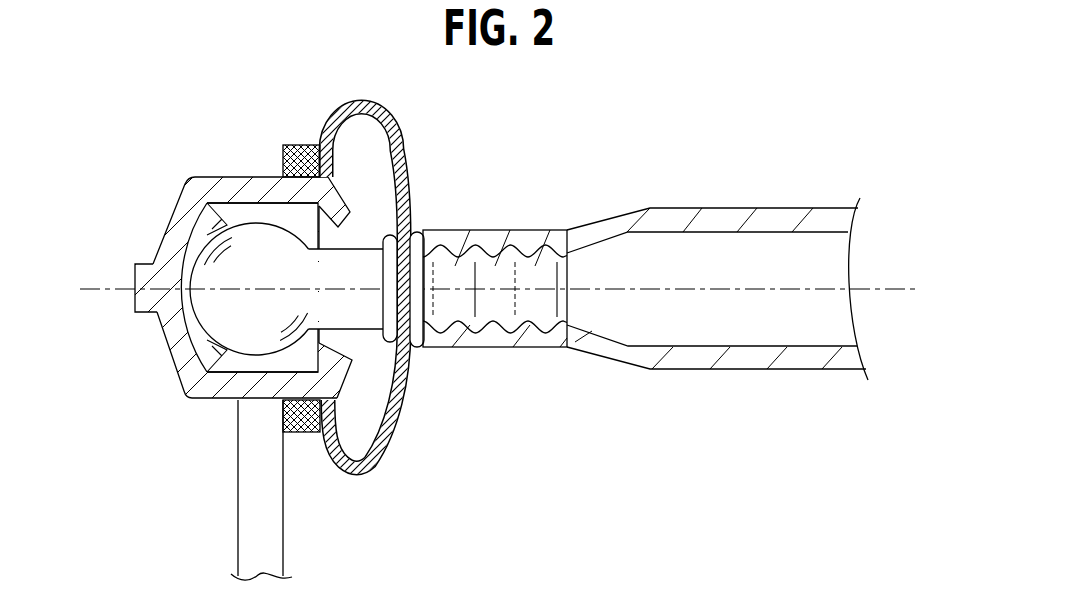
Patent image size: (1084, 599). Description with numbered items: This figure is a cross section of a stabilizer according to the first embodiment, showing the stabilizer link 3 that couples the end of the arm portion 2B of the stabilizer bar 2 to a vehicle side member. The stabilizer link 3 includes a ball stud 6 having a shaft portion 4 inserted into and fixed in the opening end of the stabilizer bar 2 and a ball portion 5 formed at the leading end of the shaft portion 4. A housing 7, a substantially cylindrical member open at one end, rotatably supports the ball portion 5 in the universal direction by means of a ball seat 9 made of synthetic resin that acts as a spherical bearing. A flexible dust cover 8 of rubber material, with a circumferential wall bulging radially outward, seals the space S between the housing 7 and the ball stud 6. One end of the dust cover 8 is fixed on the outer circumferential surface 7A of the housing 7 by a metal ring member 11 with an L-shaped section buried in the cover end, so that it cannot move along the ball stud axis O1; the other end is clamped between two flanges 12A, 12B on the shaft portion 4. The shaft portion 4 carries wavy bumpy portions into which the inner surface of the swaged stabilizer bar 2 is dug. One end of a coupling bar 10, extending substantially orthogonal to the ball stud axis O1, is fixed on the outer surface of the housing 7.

The stabilizer bar 2 is at (726, 198).
The arm portion 2B is at (778, 222).
The stabilizer link 3 is at (166, 196).
The shaft portion 4 is at (456, 267).
The ball portion 5 is at (176, 340).
The ball stud 6 is at (358, 338).
The housing 7 is at (183, 364).
The outer circumferential surface 7A is at (252, 176).
The dust cover 8 is at (393, 156).
The ball seat 9 is at (222, 212).
The coupling bar 10 is at (250, 502).
The ring member 11 is at (301, 145).
The flange 12A is at (392, 365).
The flange 12B is at (416, 346).
The space S is at (343, 240).
The ball stud axis O1 is at (903, 285).